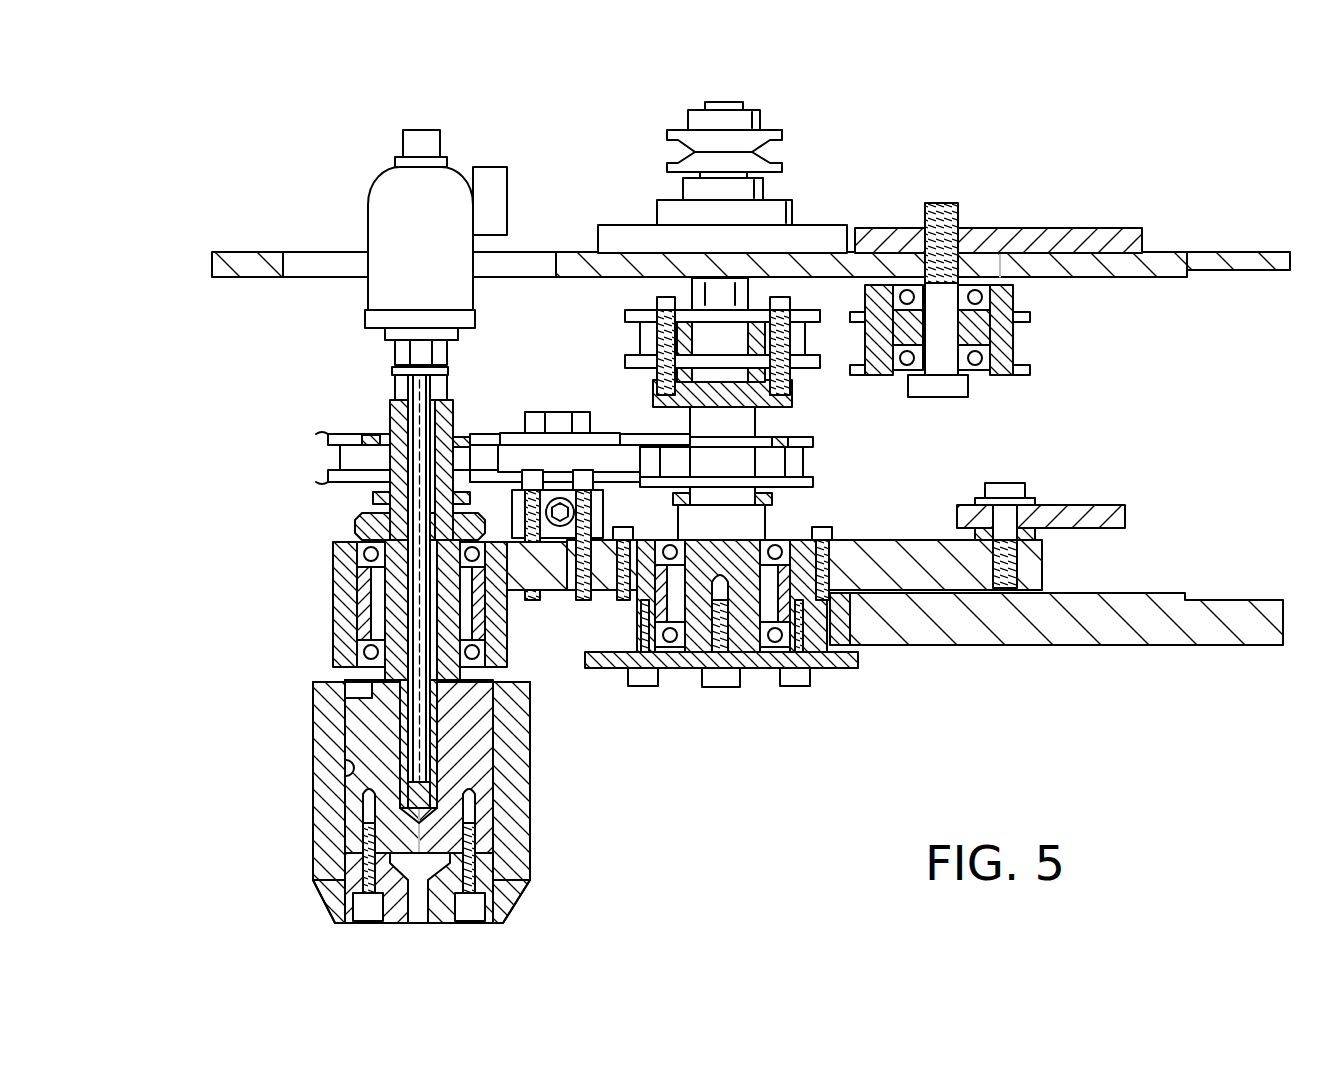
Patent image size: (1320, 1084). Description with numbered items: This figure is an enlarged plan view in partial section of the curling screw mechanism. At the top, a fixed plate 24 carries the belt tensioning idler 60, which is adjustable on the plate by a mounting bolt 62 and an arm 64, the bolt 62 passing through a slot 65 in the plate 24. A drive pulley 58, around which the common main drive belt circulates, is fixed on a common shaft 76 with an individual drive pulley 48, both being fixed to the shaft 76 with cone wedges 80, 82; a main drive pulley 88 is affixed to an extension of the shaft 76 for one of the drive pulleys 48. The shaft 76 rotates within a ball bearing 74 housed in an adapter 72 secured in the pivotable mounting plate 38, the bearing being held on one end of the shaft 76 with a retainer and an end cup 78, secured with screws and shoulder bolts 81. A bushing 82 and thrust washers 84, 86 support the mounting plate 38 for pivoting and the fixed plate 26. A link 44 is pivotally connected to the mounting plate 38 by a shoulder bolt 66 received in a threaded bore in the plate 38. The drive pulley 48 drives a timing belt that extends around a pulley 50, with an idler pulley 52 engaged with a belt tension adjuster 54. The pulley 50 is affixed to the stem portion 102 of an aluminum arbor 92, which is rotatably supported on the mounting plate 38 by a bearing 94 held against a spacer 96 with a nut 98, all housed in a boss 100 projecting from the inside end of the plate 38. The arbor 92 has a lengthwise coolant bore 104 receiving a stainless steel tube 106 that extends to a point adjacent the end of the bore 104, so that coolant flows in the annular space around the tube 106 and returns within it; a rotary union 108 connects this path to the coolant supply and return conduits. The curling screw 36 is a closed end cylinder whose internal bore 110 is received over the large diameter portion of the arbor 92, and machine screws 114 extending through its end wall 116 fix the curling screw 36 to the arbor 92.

The fixed plate 24 is at (1198, 252).
The fixed plate 26 is at (1230, 603).
The curling screw 36 is at (410, 823).
The mounting plate 38 is at (905, 546).
The link 44 is at (1100, 506).
The drive pulley 48 is at (808, 462).
The pulley 50 is at (335, 440).
The idler pulley 52 is at (612, 430).
The belt tension adjuster 54 is at (515, 530).
The drive pulley 58 is at (640, 322).
The idler 60 is at (1020, 347).
The mounting bolt 62 is at (945, 366).
The arm 64 is at (1045, 228).
The slot 65 is at (926, 262).
The shoulder bolt 66 is at (1032, 487).
The adapter 72 is at (797, 575).
The ball bearing 74 is at (678, 656).
The shaft 76 is at (760, 522).
The end cup 78 is at (752, 668).
The cone wedge 80 is at (655, 372).
The bolt 81 is at (676, 498).
The bushing 82 is at (880, 652).
The thrust washer 84 is at (858, 664).
The thrust washer 86 is at (892, 646).
The main drive pulley 88 is at (660, 152).
The arbor 92 is at (492, 768).
The bearing 94 is at (360, 545).
The spacer 96 is at (368, 600).
The nut 98 is at (407, 575).
The boss 100 is at (510, 625).
The stem portion 102 is at (327, 573).
The coolant bore 104 is at (414, 700).
The stainless steel tube 106 is at (410, 745).
The rotary union 108 is at (372, 188).
The internal bore 110 is at (350, 765).
The machine screw 114 is at (368, 878).
The end wall 116 is at (392, 920).